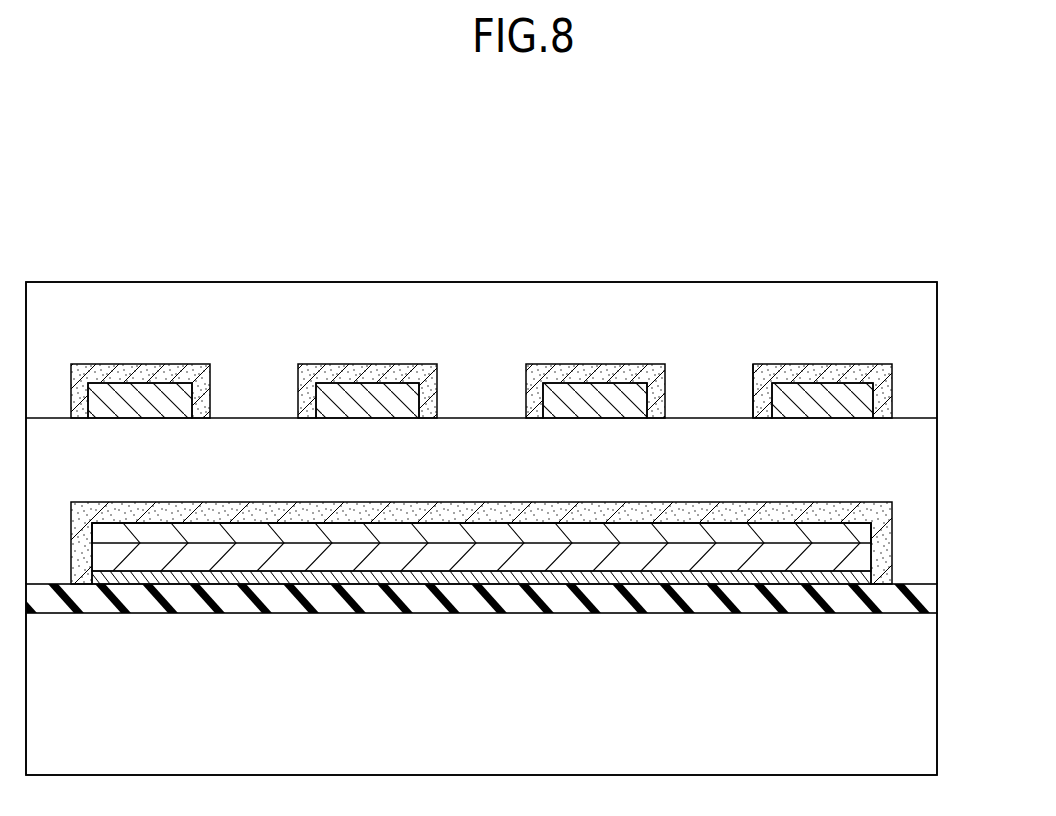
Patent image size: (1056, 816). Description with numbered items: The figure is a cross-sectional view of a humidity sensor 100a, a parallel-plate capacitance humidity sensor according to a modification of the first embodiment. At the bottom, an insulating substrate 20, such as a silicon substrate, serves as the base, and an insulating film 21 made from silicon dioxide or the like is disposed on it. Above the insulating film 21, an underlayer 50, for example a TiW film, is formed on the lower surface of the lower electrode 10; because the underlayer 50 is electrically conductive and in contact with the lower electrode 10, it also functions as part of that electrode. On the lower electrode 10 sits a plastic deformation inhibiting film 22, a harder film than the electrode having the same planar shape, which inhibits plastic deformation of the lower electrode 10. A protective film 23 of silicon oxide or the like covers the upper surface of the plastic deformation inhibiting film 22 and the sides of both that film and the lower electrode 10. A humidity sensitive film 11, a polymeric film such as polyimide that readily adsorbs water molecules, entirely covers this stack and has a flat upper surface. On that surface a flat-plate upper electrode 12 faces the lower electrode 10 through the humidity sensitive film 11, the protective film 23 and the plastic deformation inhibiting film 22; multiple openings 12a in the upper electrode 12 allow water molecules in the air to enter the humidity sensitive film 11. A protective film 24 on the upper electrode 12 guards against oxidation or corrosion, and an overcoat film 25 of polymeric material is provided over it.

The humidity sensor 100a is at (76, 245).
The overcoat film 25 is at (918, 309).
The protective film 24 is at (883, 373).
The upper electrode 12 is at (867, 402).
The opening 12a is at (753, 393).
The humidity sensitive film 11 is at (918, 438).
The protective film 23 is at (883, 512).
The plastic deformation inhibiting film 22 is at (863, 532).
The lower electrode 10 is at (863, 558).
The underlayer 50 is at (863, 577).
The insulating film 21 is at (922, 597).
The insulating substrate 20 is at (918, 693).